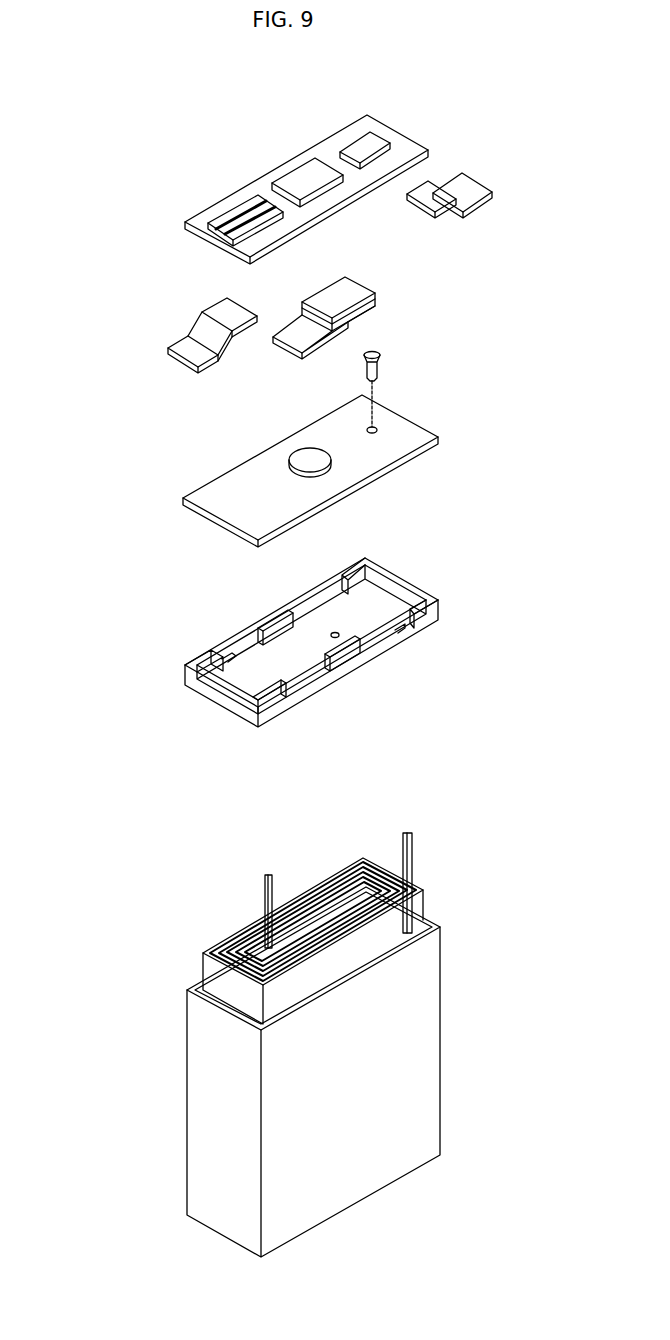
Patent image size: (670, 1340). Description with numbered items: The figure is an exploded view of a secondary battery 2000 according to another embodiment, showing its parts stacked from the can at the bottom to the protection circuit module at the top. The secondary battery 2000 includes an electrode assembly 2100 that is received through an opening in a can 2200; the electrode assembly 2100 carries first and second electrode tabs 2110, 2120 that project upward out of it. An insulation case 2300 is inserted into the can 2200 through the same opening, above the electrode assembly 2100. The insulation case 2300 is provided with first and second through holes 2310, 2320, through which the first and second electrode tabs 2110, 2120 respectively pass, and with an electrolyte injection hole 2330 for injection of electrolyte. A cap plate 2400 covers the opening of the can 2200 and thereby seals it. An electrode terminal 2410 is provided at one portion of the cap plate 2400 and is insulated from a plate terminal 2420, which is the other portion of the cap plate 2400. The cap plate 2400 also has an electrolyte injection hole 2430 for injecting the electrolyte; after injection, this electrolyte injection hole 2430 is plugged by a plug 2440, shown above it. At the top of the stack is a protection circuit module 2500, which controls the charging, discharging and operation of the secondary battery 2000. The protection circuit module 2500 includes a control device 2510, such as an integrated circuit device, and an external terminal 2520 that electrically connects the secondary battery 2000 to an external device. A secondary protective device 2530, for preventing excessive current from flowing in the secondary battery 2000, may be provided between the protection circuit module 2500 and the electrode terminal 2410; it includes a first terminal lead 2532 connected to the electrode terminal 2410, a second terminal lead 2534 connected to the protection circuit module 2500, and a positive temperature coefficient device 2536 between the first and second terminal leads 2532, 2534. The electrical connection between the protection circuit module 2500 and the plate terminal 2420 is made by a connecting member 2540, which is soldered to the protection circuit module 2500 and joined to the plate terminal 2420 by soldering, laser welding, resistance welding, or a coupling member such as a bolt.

The secondary battery 2000 is at (94, 166).
The electrode assembly 2100 is at (224, 904).
The first electrode tab 2110 is at (268, 875).
The second electrode tab 2120 is at (408, 833).
The can 2200 is at (202, 1048).
The insulation case 2300 is at (218, 693).
The first through hole 2310 is at (230, 658).
The second through hole 2320 is at (402, 640).
The electrolyte injection hole 2330 is at (333, 632).
The cap plate 2400 is at (220, 522).
The electrode terminal 2410 is at (302, 455).
The plate terminal 2420 is at (222, 493).
The electrolyte injection hole 2430 is at (375, 428).
The plug 2440 is at (381, 357).
The protection circuit module 2500 is at (466, 92).
The control device 2510 is at (322, 163).
The external terminal 2520 is at (252, 200).
The secondary protective device 2530 is at (451, 273).
The first terminal lead 2532 is at (330, 338).
The second terminal lead 2534 is at (360, 290).
The positive temperature coefficient (PTC) device 2536 is at (347, 320).
The connecting member 2540 is at (473, 185).